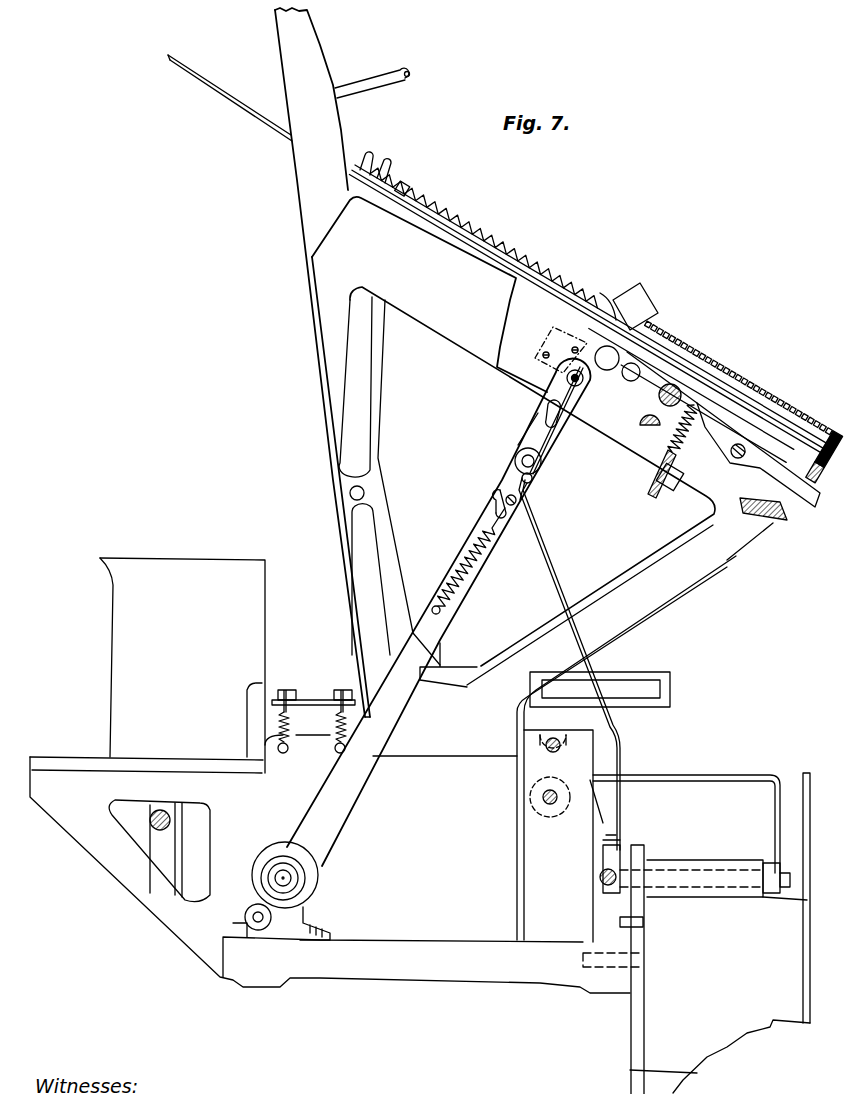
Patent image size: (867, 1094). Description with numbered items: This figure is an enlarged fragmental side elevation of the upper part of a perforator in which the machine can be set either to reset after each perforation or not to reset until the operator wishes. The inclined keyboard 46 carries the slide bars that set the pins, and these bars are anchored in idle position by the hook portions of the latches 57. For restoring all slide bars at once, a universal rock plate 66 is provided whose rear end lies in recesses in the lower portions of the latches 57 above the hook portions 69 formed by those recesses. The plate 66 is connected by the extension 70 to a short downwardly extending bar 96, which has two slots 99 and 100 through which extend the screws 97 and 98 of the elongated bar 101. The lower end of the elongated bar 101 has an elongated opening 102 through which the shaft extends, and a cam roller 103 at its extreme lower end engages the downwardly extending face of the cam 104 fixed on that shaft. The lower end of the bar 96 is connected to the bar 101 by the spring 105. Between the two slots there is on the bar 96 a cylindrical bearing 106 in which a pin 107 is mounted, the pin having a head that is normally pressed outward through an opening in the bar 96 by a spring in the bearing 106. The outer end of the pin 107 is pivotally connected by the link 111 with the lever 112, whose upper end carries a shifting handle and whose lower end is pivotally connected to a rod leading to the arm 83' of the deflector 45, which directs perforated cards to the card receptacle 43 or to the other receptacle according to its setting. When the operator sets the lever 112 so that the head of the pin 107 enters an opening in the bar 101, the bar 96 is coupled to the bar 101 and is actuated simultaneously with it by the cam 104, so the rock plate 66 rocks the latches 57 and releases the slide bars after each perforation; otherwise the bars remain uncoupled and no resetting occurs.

The inclined keyboard 46 is at (368, 330).
The latches 57 is at (643, 357).
The rock plate 66 is at (643, 382).
The hook portions 69 is at (597, 393).
The extension 70 is at (587, 387).
The downwardly extending bar 96 is at (527, 487).
The screw 97 is at (552, 390).
The screw 98 is at (505, 493).
The slot 99 is at (548, 415).
The slot 100 is at (497, 508).
The elongated bar 101 is at (420, 620).
The elongated opening 102 is at (300, 865).
The cam roller 103 is at (248, 912).
The cam 104 is at (318, 852).
The spring 105 is at (467, 578).
The cylindrical bearing 106 is at (520, 450).
The pin 107 is at (516, 462).
The link 111 is at (537, 468).
The lever 112 is at (560, 583).
The deflector 45 is at (722, 780).
The card receptacle 43 is at (696, 933).
The arm of the deflector 83' is at (678, 881).